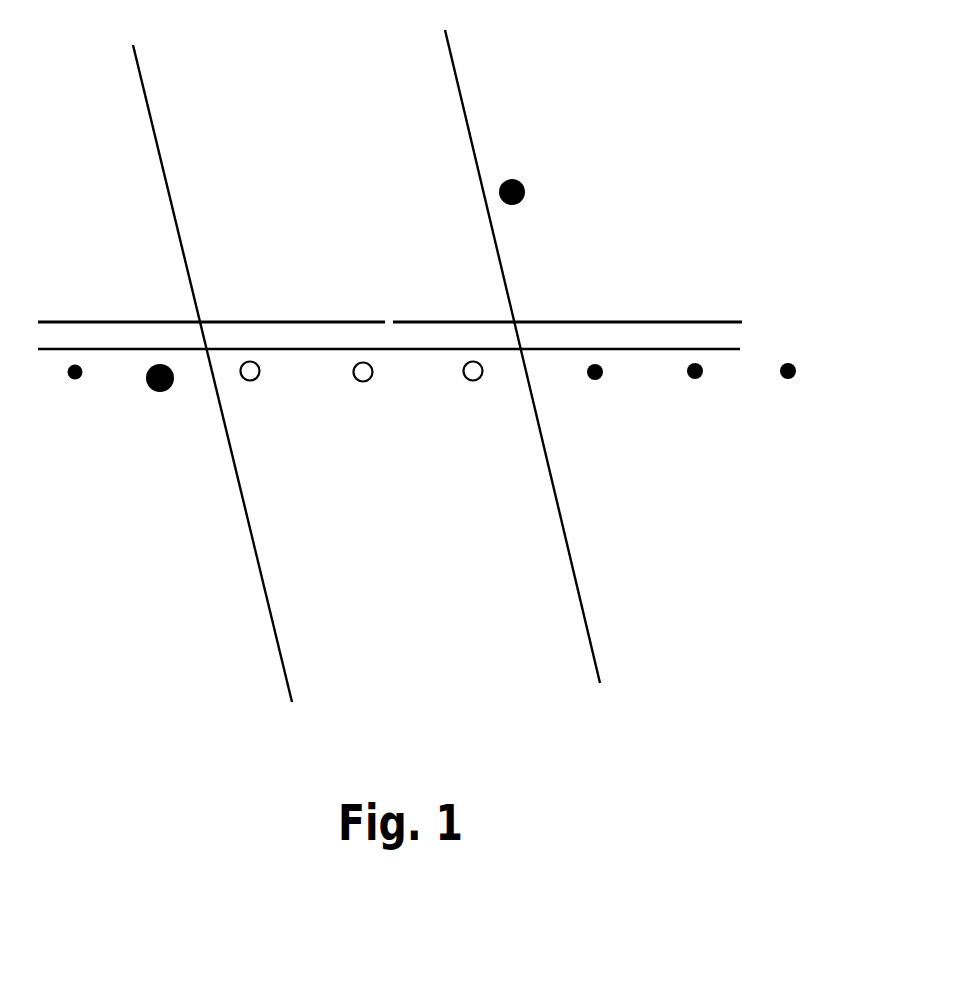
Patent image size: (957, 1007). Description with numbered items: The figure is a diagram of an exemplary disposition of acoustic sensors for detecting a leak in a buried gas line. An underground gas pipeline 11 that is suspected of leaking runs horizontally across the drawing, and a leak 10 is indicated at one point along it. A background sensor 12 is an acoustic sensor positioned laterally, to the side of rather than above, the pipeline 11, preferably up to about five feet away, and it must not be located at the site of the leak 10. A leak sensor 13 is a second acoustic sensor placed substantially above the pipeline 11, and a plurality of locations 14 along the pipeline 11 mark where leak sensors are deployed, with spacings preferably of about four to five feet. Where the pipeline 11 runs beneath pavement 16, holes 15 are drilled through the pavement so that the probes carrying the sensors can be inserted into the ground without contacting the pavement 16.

The leak 10 is at (390, 318).
The underground gas pipeline 11 is at (583, 322).
The background sensor 12 is at (523, 183).
The leak sensor 13 is at (161, 392).
The locations 14 is at (75, 380).
The holes 15 is at (367, 382).
The pavement 16 is at (386, 568).